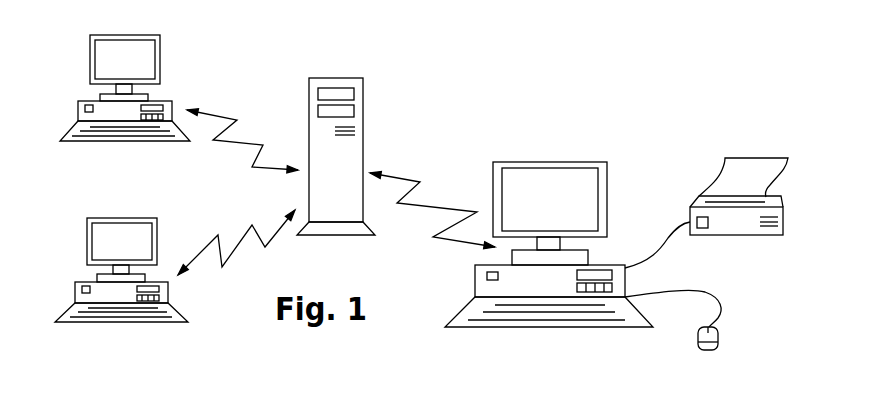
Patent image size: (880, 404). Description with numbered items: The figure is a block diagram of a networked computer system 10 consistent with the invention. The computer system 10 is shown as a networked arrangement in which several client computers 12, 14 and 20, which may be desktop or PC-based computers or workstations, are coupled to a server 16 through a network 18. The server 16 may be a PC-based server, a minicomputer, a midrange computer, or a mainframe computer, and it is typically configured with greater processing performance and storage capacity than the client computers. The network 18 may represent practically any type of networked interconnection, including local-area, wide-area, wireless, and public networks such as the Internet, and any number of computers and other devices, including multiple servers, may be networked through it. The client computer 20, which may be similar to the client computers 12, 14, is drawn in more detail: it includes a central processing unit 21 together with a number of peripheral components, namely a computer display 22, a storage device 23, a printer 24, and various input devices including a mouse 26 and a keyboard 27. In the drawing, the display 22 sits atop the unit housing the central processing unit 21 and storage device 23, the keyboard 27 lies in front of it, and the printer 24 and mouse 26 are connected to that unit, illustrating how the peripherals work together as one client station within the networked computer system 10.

The computer system 10 is at (482, 85).
The client computer 12 is at (90, 50).
The client computer 14 is at (87, 220).
The server 16 is at (328, 78).
The network 18 is at (248, 145).
The client computer 20 is at (598, 162).
The central processing unit 21 is at (482, 287).
The computer display 22 is at (525, 165).
The storage device 23 is at (590, 292).
The printer 24 is at (705, 203).
The mouse 26 is at (717, 343).
The keyboard 27 is at (463, 323).